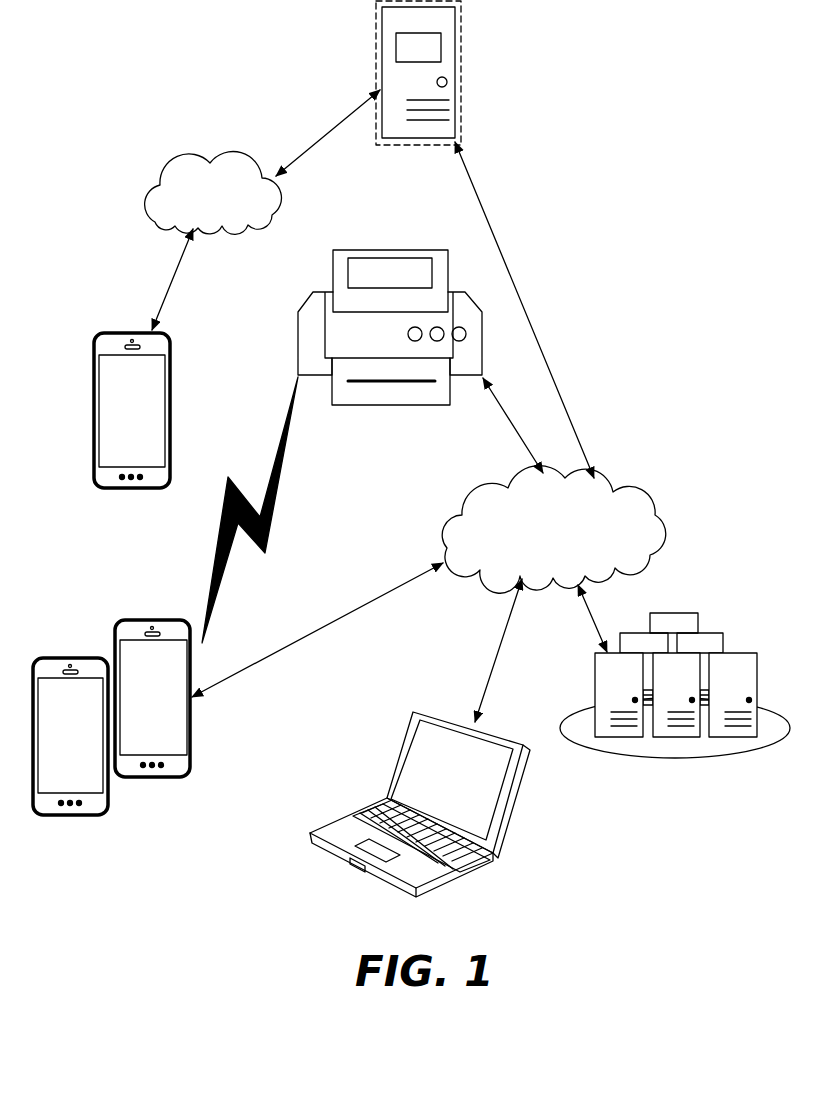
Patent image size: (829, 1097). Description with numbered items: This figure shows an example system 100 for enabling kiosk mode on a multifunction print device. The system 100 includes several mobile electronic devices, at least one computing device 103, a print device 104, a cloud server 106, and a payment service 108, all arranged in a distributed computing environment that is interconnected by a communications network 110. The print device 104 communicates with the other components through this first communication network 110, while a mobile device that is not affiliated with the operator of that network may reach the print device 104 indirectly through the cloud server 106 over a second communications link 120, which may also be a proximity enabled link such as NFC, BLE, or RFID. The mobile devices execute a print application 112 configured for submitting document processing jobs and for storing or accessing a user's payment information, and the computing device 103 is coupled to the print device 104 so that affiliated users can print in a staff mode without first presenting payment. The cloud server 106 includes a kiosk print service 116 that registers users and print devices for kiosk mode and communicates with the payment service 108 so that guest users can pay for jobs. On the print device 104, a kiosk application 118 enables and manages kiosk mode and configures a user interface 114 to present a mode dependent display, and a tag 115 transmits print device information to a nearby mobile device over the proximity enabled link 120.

The system 100 is at (585, 148).
The computing device 103 is at (445, 880).
The print device 104 is at (400, 324).
The cloud server 106 is at (436, 94).
The payment service 108 is at (633, 759).
The communications network 110 is at (655, 500).
The print application 112 is at (270, 521).
The user interface 114 is at (462, 328).
The tag 115 is at (415, 383).
The kiosk print service 116 is at (441, 46).
The kiosk application 118 is at (390, 254).
The second communications link 120 is at (198, 161).